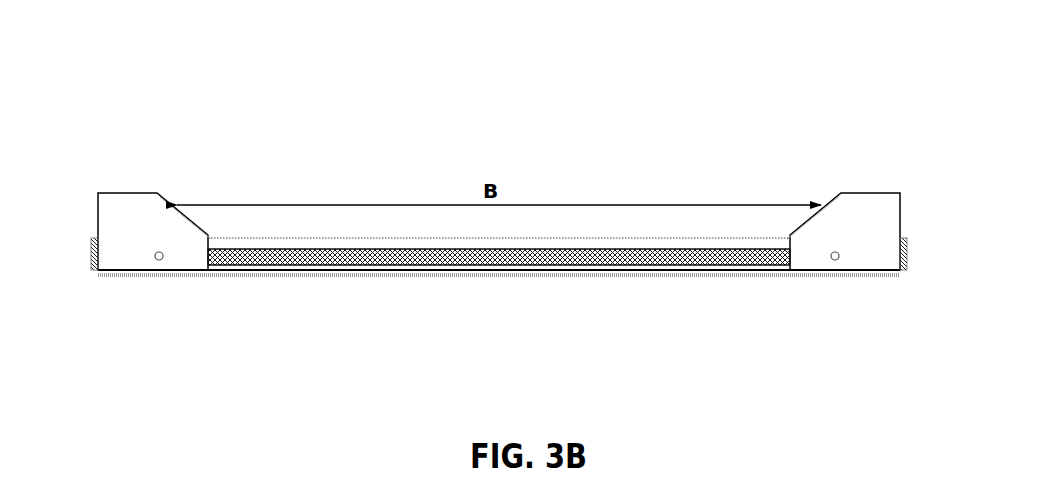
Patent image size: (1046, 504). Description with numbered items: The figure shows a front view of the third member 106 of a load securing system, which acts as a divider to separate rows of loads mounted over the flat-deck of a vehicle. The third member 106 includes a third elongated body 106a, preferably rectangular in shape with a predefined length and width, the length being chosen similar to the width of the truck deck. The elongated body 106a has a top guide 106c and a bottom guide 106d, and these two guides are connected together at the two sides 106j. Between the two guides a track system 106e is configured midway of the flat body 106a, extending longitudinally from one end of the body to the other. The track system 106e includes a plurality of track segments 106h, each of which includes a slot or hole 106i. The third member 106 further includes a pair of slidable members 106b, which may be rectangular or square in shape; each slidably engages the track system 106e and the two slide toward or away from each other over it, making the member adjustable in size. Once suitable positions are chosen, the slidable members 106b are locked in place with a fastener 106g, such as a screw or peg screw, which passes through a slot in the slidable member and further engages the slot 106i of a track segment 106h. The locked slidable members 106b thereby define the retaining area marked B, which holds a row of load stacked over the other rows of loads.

The third member 106 is at (689, 74).
The third elongated body 106a is at (685, 278).
The slidable members 106b is at (158, 192).
The top guide 106c is at (521, 236).
The bottom guide 106d is at (557, 273).
The track system 106e is at (432, 265).
The fastener 106g is at (157, 259).
The track segments 106h is at (338, 265).
The slot or hole 106i is at (337, 267).
The sides 106j is at (93, 242).